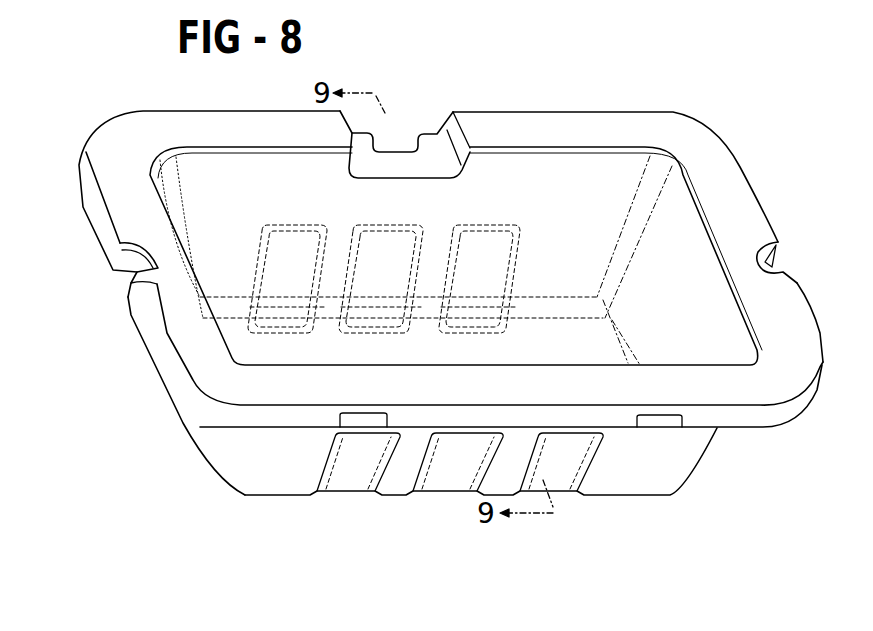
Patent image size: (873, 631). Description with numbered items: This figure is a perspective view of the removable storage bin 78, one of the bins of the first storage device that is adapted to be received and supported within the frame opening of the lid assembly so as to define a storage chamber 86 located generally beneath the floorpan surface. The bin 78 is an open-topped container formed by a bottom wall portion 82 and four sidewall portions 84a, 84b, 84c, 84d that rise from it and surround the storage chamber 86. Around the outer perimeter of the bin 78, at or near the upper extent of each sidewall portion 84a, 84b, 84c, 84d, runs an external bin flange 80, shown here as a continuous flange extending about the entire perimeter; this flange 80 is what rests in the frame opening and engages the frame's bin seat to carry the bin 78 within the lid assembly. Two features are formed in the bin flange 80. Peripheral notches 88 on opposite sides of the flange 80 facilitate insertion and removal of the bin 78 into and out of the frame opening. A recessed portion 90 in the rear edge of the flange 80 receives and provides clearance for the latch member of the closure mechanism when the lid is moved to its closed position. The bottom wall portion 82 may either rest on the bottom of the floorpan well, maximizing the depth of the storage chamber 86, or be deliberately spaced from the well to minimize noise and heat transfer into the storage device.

The removable storage bin 78 is at (83, 111).
The external bin flange 80 is at (77, 181).
The bottom wall portion 82 is at (437, 360).
The sidewall portion 84a is at (277, 470).
The sidewall portion 84b is at (688, 228).
The sidewall portion 84c is at (190, 422).
The sidewall portion 84d is at (217, 163).
The storage chamber 86 is at (285, 147).
The peripheral notches 88 is at (135, 273).
The recessed portion 90 is at (447, 124).